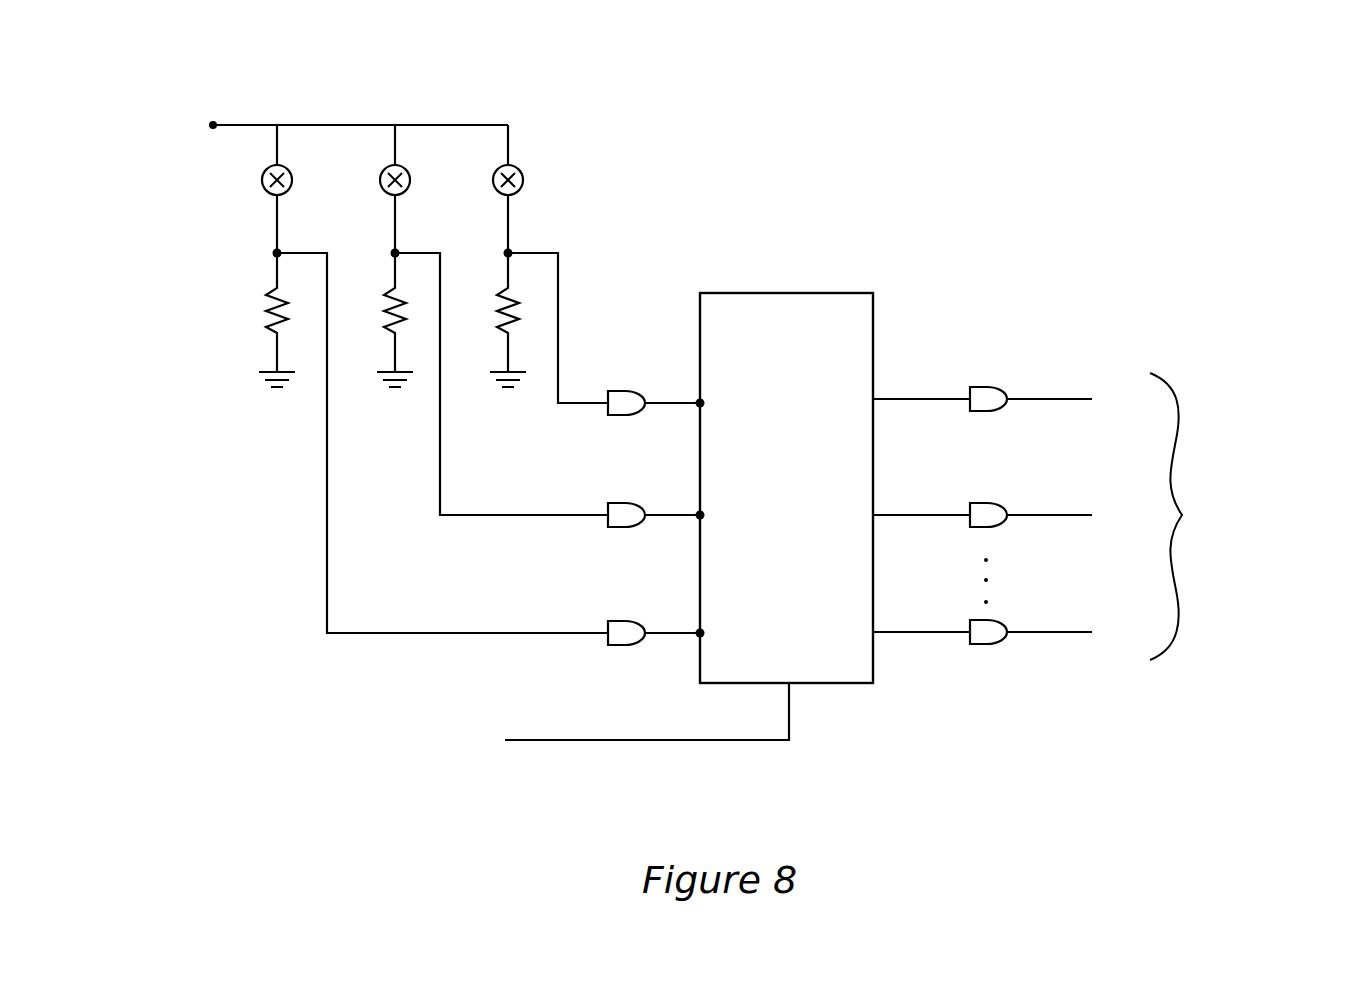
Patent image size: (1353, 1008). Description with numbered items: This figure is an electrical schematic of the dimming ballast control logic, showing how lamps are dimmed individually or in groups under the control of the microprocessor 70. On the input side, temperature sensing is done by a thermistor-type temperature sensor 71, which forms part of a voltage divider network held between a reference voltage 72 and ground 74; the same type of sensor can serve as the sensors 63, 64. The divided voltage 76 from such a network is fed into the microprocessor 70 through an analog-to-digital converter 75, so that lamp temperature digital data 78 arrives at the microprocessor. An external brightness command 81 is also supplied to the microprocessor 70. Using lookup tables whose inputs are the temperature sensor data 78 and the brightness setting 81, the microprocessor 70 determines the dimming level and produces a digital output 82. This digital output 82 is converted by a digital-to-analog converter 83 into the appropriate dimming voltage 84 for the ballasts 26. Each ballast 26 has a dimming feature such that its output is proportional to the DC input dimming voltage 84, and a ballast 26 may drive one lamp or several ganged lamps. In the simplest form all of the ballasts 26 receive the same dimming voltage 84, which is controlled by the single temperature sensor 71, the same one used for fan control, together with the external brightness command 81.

The ballast 26 is at (1210, 498).
The sensor 63 is at (399, 167).
The sensor 64 is at (266, 192).
The microprocessor 70 is at (815, 368).
The temperature sensor 71 is at (512, 167).
The reference voltage 72 is at (213, 125).
The ground 74 is at (271, 370).
The analog-to-digital converter 75 is at (625, 646).
The divided voltage 76 is at (538, 252).
The lamp temperature digital data 78 is at (680, 400).
The external brightness command 81 is at (762, 742).
The digital output 82 is at (892, 515).
The digital-to-analog converter 83 is at (970, 520).
The dimming voltage 84 is at (1100, 505).